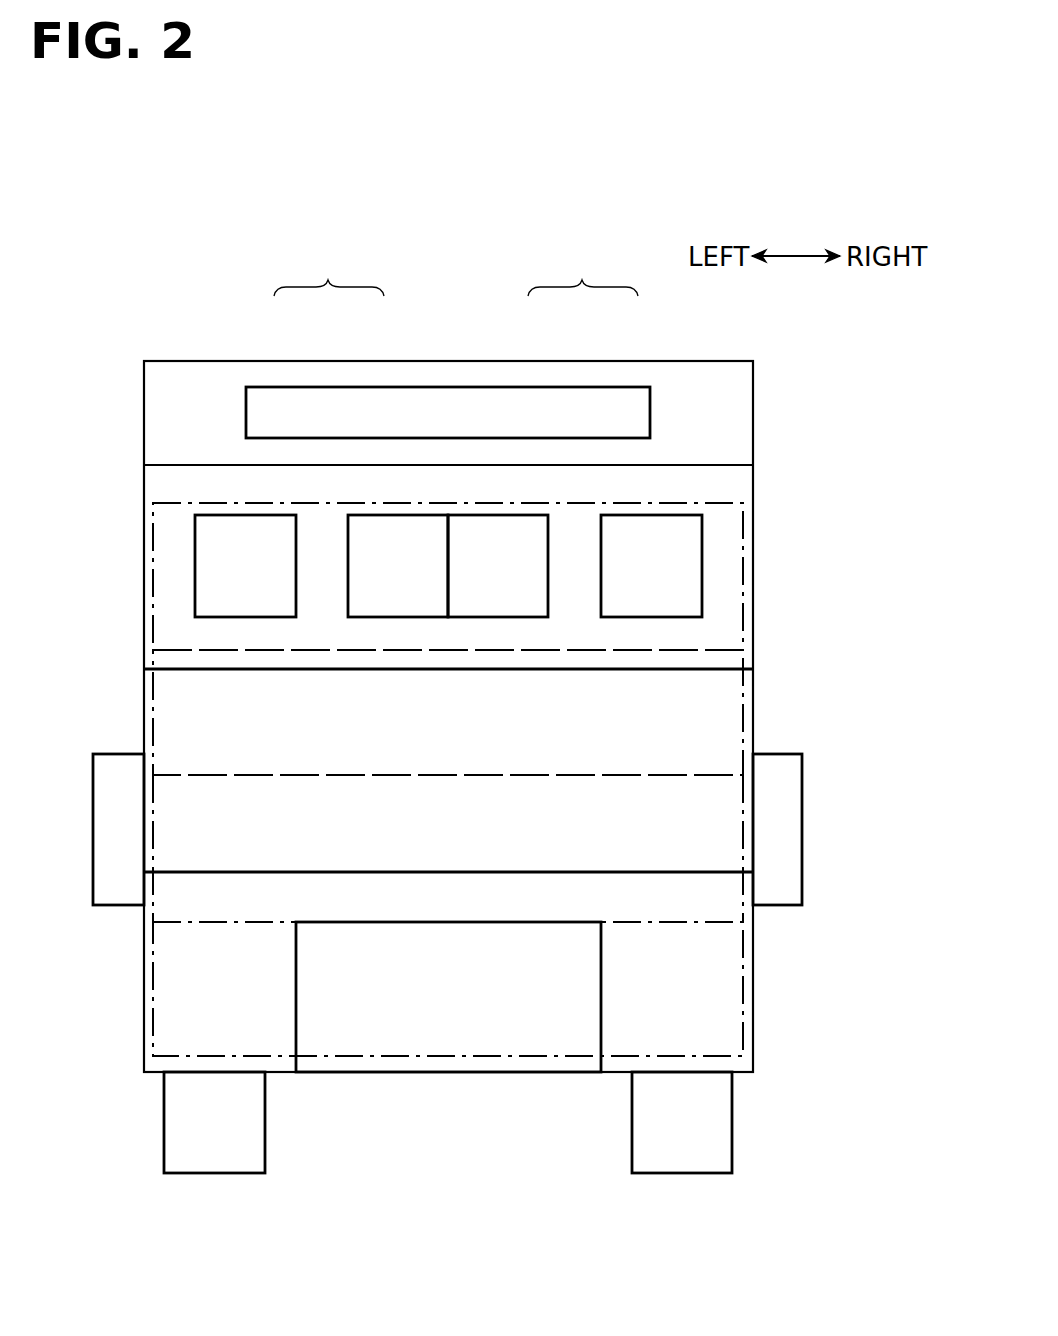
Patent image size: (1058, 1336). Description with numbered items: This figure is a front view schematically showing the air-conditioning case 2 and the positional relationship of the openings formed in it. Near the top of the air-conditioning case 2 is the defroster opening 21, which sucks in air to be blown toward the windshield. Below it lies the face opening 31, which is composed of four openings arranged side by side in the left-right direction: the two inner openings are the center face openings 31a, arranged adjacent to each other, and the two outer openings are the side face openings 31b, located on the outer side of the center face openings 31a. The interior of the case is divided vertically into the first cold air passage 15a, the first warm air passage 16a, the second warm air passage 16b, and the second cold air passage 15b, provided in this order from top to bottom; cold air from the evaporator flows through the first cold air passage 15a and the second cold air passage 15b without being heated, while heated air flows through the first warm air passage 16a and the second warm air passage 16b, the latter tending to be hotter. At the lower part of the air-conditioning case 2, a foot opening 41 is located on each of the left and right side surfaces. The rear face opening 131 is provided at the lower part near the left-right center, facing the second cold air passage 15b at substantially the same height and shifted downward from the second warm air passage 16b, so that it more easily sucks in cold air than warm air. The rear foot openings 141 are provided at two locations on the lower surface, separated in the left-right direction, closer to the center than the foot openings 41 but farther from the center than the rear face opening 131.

The air-conditioning case 2 is at (753, 383).
The defroster opening 21 is at (445, 392).
The first cold air passage 15a is at (738, 616).
The second cold air passage 15b is at (738, 996).
The first warm air passage 16a is at (738, 718).
The second warm air passage 16b is at (738, 848).
The face opening 31 is at (456, 274).
The center face opening 31a is at (348, 537).
The side face opening 31b is at (296, 540).
The foot opening 41 is at (93, 800).
The rear face opening 131 is at (600, 1017).
The rear foot opening 141 is at (186, 1175).